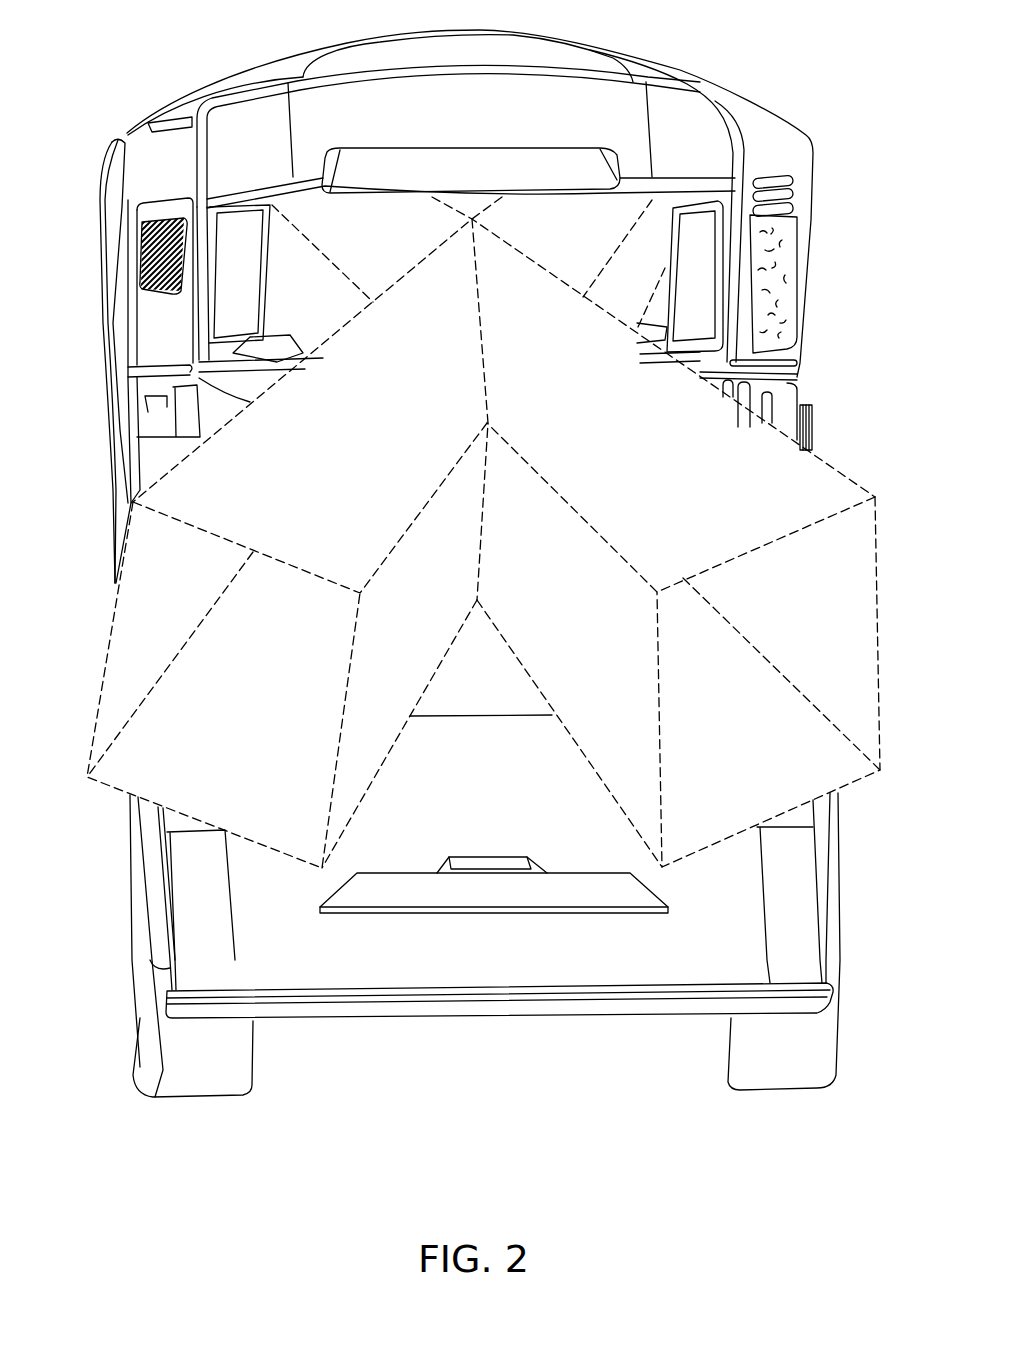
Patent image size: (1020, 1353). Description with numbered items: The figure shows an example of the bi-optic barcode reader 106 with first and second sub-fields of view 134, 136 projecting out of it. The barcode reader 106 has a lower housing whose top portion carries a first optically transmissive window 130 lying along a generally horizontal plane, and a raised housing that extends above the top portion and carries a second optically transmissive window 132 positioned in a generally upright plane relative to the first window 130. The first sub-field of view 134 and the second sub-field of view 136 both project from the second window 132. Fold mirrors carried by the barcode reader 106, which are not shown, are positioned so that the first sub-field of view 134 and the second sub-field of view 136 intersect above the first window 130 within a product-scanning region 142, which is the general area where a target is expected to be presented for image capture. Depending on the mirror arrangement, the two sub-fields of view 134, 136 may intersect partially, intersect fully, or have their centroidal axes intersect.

The barcode reader 106 is at (120, 78).
The first optically transmissive window 130 is at (470, 690).
The second optically transmissive window 132 is at (657, 314).
The first sub-field of view 134 is at (830, 480).
The second sub-field of view 136 is at (263, 530).
The product-scanning region 142 is at (790, 397).